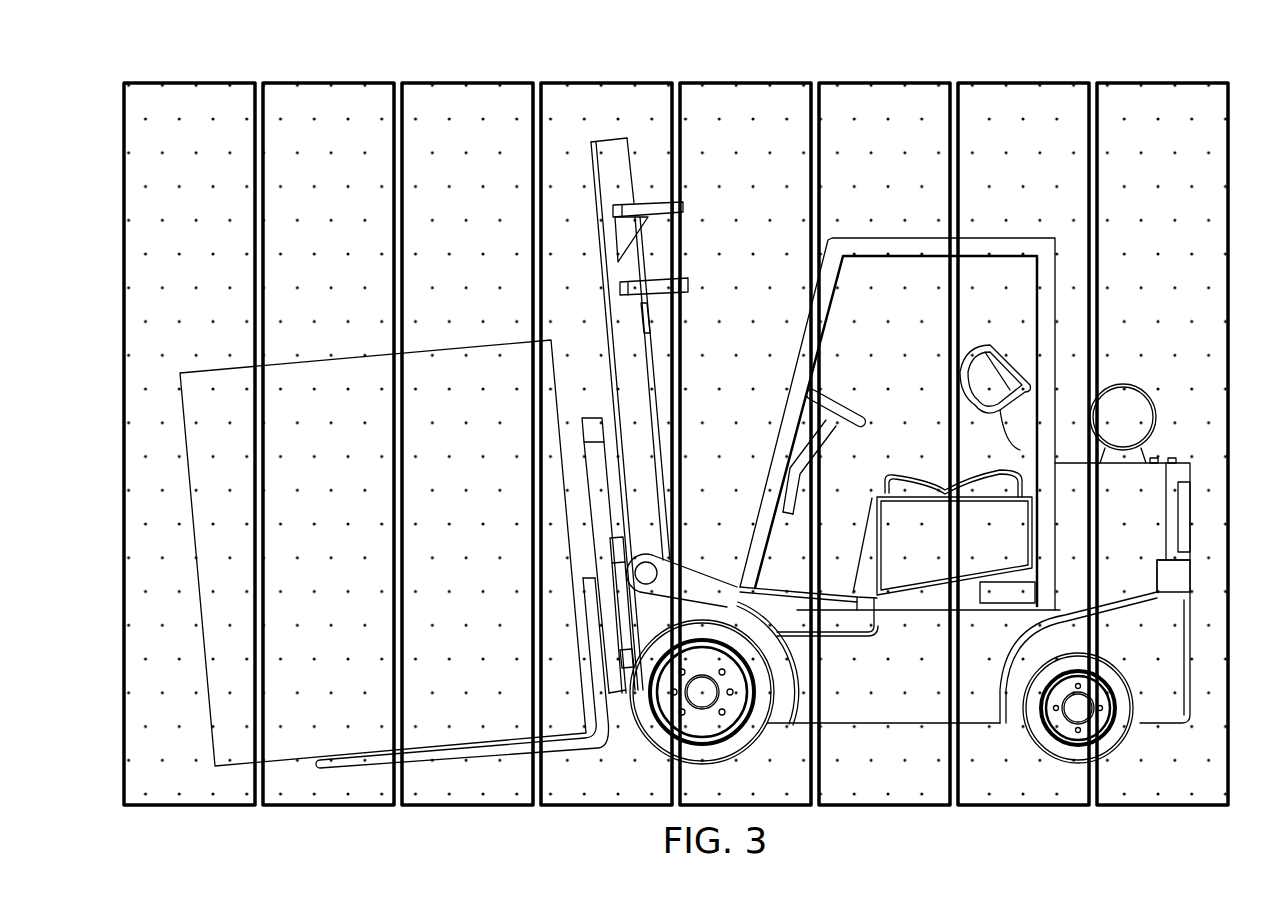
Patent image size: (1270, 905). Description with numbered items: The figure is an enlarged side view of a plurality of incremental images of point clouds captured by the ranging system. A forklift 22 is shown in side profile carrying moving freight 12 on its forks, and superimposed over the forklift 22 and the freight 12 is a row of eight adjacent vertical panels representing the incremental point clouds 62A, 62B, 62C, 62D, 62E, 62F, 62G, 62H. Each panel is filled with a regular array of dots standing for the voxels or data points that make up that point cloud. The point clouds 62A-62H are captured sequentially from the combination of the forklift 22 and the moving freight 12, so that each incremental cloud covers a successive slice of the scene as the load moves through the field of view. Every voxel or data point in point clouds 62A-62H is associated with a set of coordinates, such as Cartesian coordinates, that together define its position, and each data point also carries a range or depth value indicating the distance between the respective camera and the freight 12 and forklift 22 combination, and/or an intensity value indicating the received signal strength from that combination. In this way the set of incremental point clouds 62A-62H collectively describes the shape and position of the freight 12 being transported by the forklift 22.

The freight 12 is at (355, 366).
The forklift 22 is at (895, 727).
The point cloud 62A is at (195, 107).
The point cloud 62B is at (334, 107).
The point cloud 62C is at (473, 107).
The point cloud 62D is at (612, 107).
The point cloud 62E is at (751, 107).
The point cloud 62F is at (890, 107).
The point cloud 62G is at (1029, 107).
The point cloud 62H is at (1168, 107).